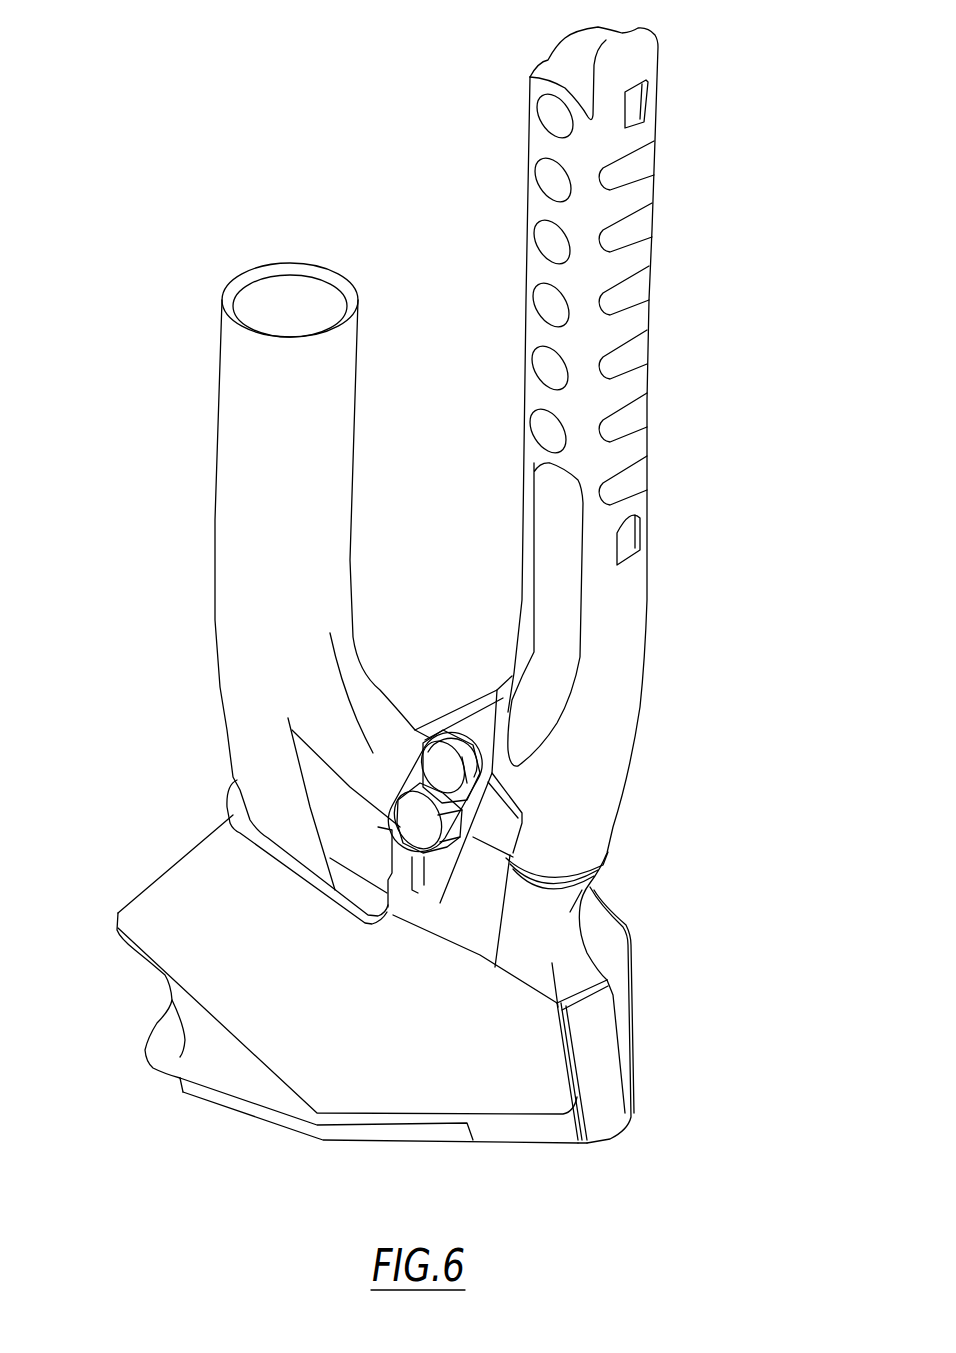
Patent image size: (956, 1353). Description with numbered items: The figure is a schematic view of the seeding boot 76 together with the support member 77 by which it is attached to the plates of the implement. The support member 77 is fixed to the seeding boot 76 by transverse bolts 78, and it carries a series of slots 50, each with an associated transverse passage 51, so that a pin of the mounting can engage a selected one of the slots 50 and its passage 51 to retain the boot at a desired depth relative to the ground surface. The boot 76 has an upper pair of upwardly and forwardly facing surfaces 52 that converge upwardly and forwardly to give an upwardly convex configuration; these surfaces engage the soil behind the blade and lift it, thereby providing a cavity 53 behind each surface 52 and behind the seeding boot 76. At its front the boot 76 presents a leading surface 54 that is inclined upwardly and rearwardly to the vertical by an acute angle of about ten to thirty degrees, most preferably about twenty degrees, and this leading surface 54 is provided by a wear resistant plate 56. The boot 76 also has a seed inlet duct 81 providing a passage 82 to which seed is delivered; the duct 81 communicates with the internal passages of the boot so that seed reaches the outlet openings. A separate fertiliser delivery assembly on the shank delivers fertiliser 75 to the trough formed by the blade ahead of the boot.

The slots 50 is at (645, 160).
The transverse passage 51 is at (545, 240).
The upwardly and forwardly facing surfaces 52 is at (400, 1025).
The cavity 53 is at (137, 1013).
The leading surface 54 is at (607, 1033).
The wear resistant plate 56 is at (580, 1123).
The fertiliser 75 is at (495, 916).
The seeding boot 76 is at (162, 663).
The support member 77 is at (647, 590).
The transverse bolts 78 is at (436, 760).
The seed inlet duct 81 is at (226, 652).
The passage 82 is at (322, 293).